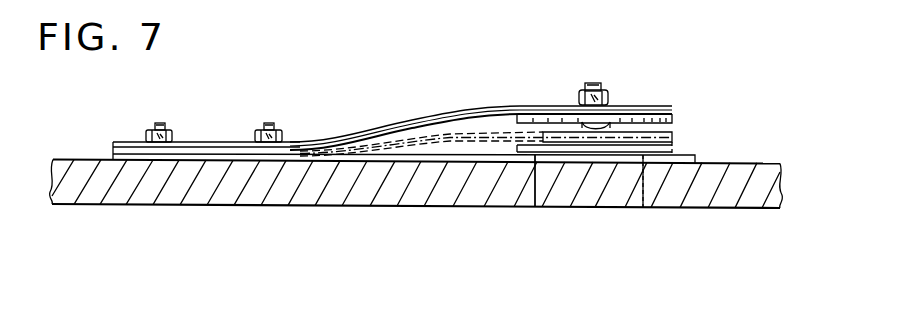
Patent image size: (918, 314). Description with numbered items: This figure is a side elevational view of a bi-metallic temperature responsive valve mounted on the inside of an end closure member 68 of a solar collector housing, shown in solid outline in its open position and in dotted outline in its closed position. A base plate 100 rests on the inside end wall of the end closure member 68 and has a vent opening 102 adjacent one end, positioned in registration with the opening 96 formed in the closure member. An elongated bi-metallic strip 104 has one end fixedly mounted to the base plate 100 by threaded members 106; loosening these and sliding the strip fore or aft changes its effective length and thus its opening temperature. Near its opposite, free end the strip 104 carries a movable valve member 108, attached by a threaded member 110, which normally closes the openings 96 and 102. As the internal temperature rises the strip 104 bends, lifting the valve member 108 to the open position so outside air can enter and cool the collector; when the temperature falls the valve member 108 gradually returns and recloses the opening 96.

The end closure member 68 is at (302, 206).
The opening 96 is at (547, 183).
The base plate 100 is at (164, 158).
The vent opening 102 is at (640, 155).
The bi-metallic strip 104 is at (432, 119).
The threaded members 106 is at (173, 133).
The movable valve member 108 is at (672, 140).
The threaded member 110 is at (608, 94).